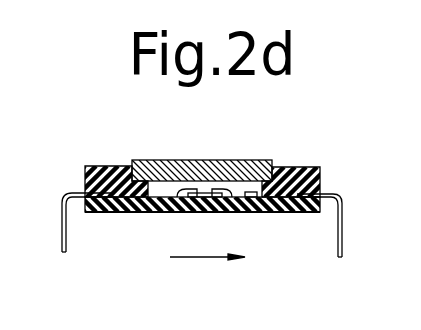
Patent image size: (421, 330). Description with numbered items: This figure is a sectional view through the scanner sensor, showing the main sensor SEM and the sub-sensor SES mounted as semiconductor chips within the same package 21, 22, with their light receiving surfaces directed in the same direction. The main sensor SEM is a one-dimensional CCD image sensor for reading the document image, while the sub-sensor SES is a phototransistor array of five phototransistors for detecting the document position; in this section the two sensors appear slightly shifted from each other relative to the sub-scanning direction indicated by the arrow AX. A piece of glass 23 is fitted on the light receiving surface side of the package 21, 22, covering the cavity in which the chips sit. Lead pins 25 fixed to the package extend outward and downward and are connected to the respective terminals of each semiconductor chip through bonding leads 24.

The package 21 is at (113, 213).
The package 22 is at (103, 165).
The piece of glass 23 is at (158, 160).
The bonding leads 24 is at (168, 213).
The lead pins 25 is at (67, 238).
The main sensor SEM is at (203, 190).
The sub-sensor SES is at (250, 192).
The arrow AX is at (207, 269).